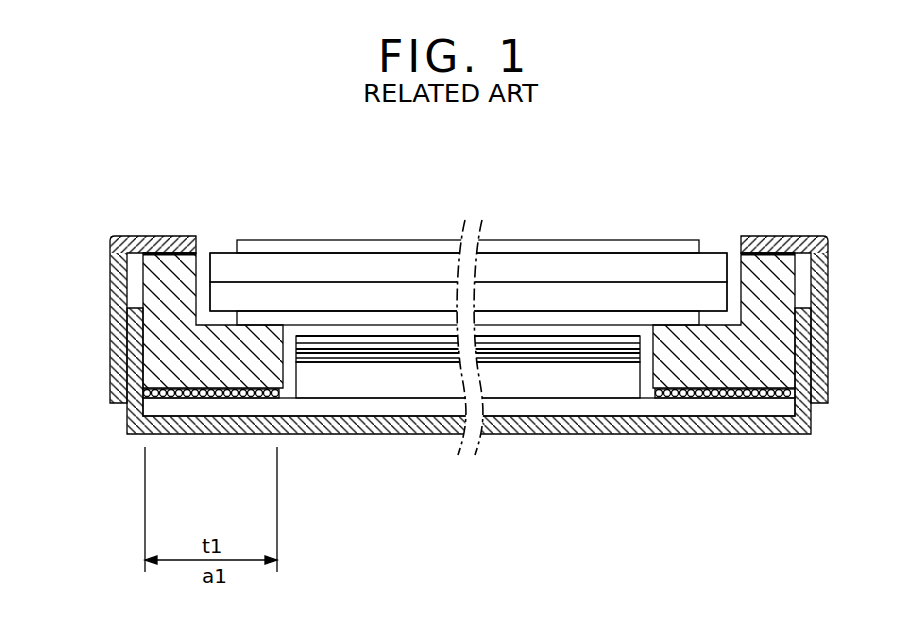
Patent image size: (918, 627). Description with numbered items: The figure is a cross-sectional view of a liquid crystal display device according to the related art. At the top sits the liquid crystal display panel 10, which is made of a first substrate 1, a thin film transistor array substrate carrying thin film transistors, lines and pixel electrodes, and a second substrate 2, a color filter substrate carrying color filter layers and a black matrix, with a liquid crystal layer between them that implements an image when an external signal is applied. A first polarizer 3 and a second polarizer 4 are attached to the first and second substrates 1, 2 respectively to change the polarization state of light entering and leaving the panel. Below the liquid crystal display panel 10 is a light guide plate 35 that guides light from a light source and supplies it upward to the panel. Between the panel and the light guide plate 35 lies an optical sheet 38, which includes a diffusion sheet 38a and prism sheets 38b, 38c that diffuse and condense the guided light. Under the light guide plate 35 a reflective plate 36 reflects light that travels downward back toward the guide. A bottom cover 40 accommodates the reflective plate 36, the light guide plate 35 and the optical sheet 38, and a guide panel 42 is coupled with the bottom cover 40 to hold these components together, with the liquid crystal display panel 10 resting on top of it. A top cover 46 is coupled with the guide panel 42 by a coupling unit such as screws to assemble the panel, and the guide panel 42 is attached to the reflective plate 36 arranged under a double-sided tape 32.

The liquid crystal display panel 10 is at (683, 178).
The first substrate 1 is at (568, 270).
The second substrate 2 is at (608, 292).
The first polarizer 3 is at (645, 246).
The second polarizer 4 is at (674, 318).
The double-sided tape 32 is at (260, 396).
The light guide plate 35 is at (529, 384).
The reflective plate 36 is at (585, 408).
The optical sheet 38 is at (408, 178).
The diffusion sheet 38a is at (375, 360).
The prism sheet 38b is at (346, 350).
The prism sheet 38c is at (321, 340).
The bottom cover 40 is at (365, 423).
The guide panel 42 is at (163, 367).
The top cover 46 is at (147, 242).